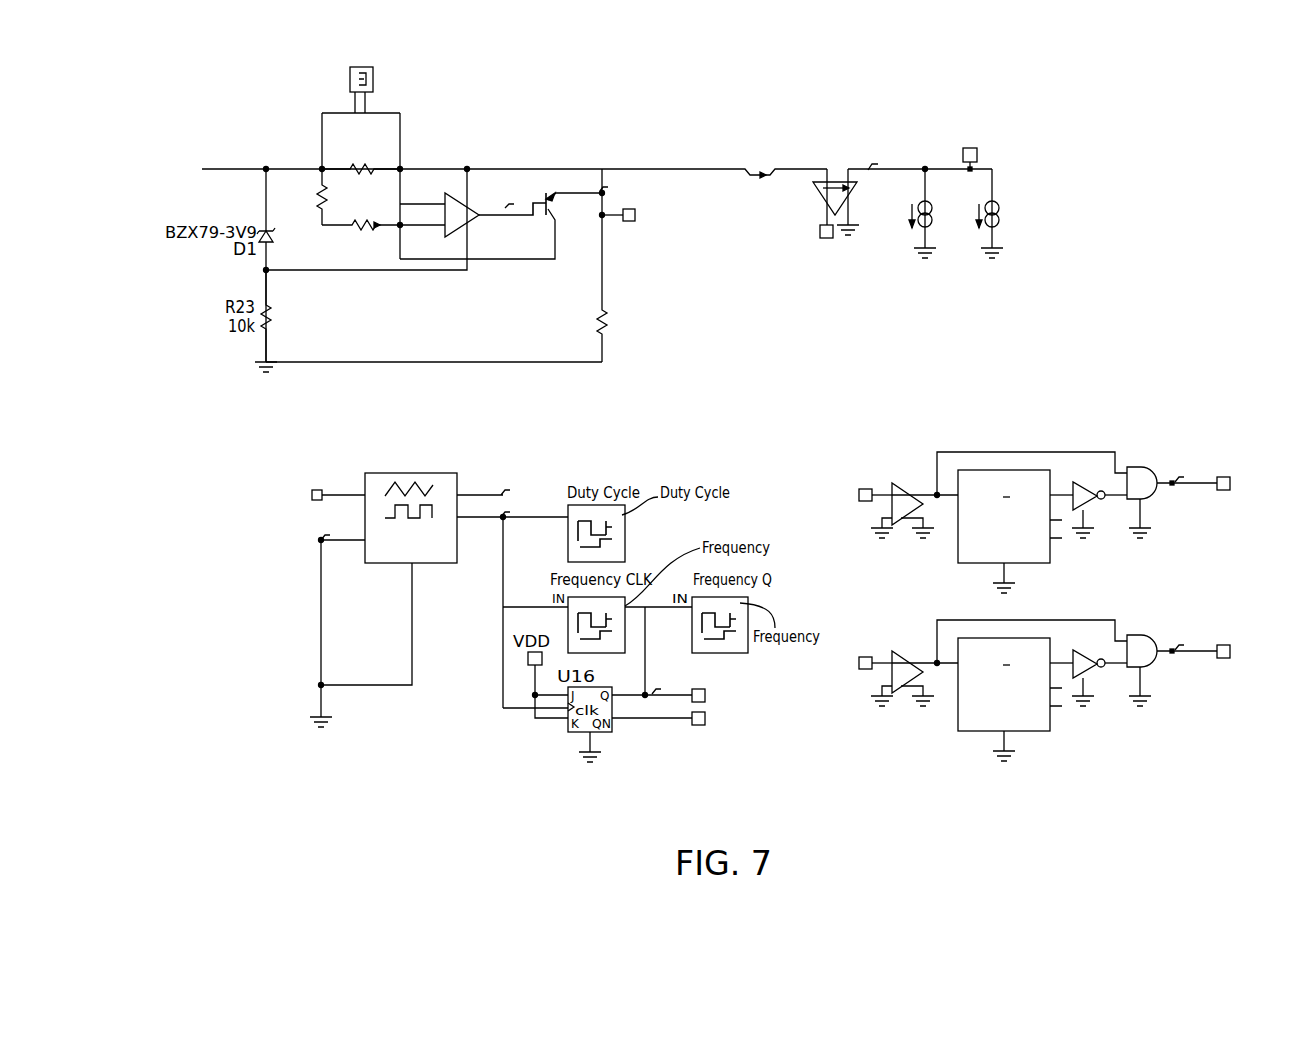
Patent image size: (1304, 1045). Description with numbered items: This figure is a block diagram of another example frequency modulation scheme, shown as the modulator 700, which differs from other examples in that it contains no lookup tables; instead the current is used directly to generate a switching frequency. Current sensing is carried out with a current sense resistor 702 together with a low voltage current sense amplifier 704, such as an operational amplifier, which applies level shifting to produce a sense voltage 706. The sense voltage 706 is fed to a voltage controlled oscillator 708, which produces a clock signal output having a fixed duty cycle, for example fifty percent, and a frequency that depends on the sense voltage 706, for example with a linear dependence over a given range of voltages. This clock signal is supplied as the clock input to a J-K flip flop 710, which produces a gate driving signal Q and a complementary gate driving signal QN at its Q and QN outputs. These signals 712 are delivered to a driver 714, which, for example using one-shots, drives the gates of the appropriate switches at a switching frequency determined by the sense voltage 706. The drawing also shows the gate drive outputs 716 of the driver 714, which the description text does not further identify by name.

The modulator 700 is at (1113, 156).
The current sense resistor 702 is at (388, 147).
The low voltage current sense amplifier 704 is at (460, 233).
The sense voltage 706 is at (640, 233).
The voltage controlled oscillator 708 is at (477, 445).
The J-K flip flop 710 is at (604, 685).
The gate driving signals 712 is at (657, 722).
The driver 714 is at (1060, 443).
The gate drive output 716 is at (1228, 497).